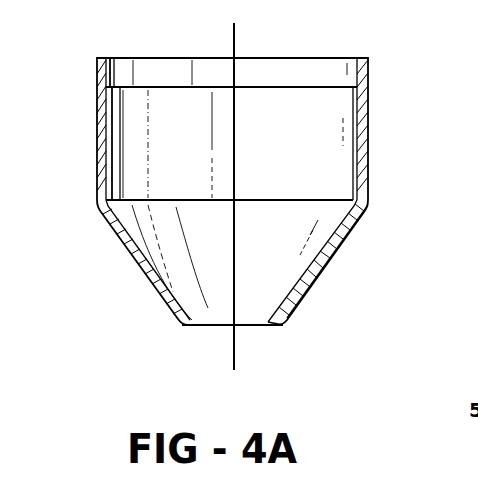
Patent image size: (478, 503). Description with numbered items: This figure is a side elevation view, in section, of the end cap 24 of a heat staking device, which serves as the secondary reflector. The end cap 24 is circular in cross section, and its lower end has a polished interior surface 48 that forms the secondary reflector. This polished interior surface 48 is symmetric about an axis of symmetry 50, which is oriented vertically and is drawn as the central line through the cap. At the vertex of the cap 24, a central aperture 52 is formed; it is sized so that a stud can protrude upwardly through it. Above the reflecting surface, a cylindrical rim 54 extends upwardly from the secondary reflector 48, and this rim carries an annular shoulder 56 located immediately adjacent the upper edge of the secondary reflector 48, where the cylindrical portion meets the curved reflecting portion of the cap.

The end cap 24 is at (97, 183).
The polished interior surface (secondary reflector) 48 is at (305, 267).
The axis of symmetry 50 is at (233, 362).
The central aperture 52 is at (262, 327).
The cylindrical rim 54 is at (105, 120).
The annular shoulder 56 is at (327, 200).